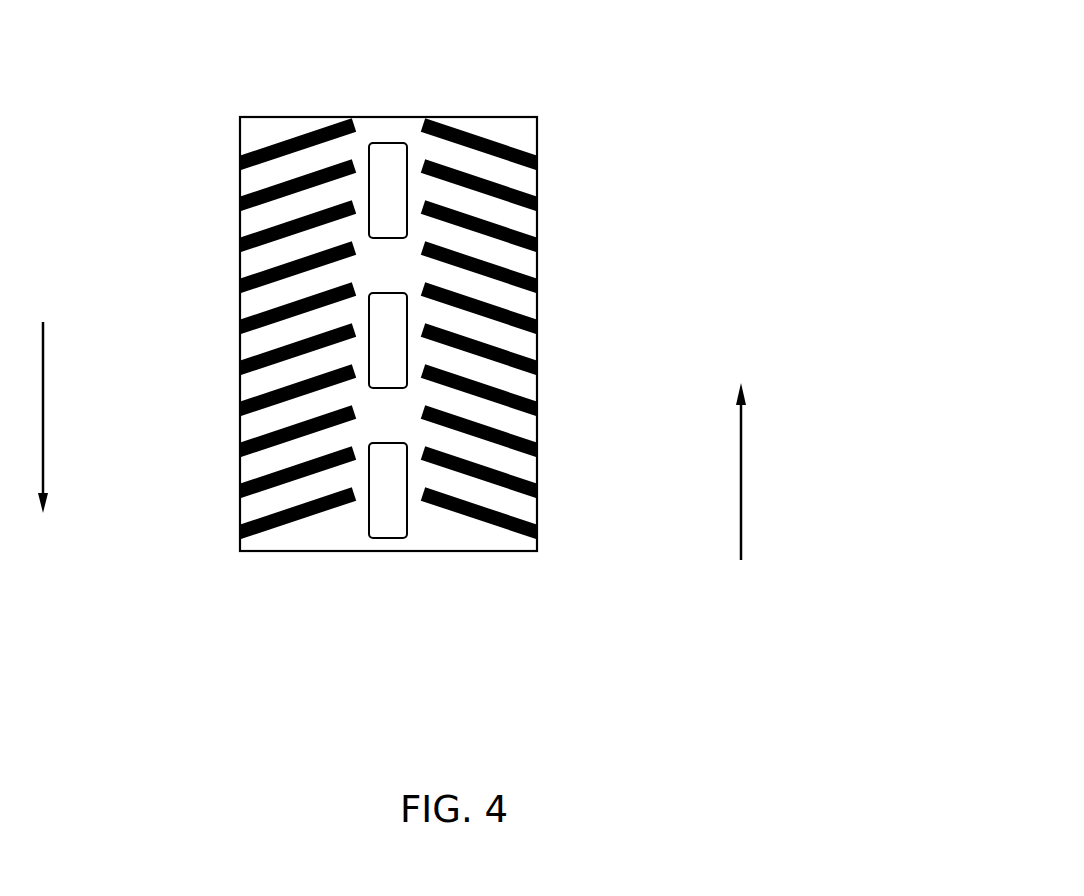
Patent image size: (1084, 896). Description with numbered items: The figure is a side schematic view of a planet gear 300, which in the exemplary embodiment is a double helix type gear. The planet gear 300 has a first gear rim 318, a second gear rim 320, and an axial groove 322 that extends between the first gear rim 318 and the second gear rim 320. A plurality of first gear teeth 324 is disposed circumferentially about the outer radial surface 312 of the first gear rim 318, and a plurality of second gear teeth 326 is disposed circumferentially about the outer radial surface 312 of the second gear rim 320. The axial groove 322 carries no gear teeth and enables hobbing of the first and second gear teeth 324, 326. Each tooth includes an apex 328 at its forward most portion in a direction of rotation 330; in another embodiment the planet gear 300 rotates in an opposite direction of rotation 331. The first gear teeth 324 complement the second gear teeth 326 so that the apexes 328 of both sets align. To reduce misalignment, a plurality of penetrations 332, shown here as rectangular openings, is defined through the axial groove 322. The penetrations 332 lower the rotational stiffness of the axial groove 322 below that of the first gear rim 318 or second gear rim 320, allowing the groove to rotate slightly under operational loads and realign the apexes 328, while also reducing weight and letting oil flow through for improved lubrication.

The planet gear 300 is at (629, 55).
The outer radial surface 312 is at (388, 281).
The first gear rim 318 is at (295, 552).
The second gear rim 320 is at (478, 552).
The axial groove 322 is at (387, 552).
The first gear teeth 324 is at (250, 442).
The second gear teeth 326 is at (520, 310).
The apex 328 is at (333, 120).
The direction of rotation 330 is at (741, 470).
The direction of rotation 331 is at (43, 392).
The penetrations 332 is at (407, 195).